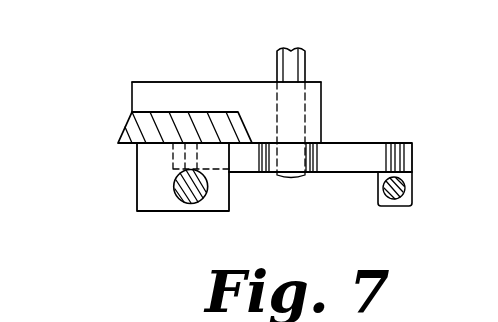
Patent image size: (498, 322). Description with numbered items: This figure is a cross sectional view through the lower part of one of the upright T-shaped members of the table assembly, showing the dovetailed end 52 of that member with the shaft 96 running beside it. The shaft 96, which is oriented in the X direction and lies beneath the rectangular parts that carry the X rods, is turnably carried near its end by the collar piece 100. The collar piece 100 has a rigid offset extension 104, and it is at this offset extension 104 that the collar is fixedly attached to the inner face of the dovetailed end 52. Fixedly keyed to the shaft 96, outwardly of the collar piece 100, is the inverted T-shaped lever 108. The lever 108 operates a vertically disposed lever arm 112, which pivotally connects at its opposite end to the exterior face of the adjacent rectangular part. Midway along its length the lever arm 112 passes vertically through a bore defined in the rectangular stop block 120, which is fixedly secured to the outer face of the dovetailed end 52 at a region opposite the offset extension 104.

The dovetailed end 52 is at (147, 130).
The shaft 96 is at (293, 67).
The collar piece 100 is at (318, 108).
The offset extension 104 is at (193, 97).
The inverted T-shaped lever 108 is at (355, 158).
The lever arm 112 is at (191, 203).
The stop block 120 is at (153, 185).